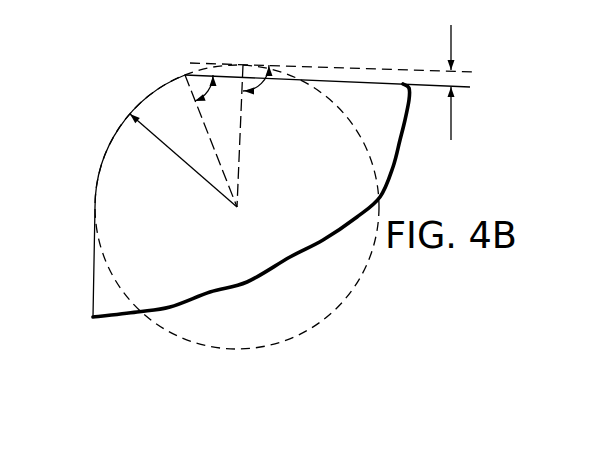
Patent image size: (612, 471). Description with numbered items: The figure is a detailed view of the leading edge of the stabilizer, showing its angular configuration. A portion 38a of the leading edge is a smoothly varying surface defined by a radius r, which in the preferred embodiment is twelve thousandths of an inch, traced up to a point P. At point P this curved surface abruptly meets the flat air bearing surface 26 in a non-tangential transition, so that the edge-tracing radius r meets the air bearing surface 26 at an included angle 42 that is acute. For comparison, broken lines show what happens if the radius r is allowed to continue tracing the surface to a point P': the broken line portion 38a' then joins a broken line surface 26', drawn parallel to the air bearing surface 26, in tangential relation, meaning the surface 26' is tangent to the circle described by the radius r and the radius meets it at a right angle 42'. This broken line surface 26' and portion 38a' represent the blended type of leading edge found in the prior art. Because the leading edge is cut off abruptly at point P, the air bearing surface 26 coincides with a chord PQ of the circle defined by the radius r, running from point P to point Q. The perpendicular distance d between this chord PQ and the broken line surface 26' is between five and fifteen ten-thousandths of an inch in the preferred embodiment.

The air bearing surface 26 is at (281, 196).
The broken line surface 26' is at (284, 179).
The portion of the leading edge 38a is at (116, 196).
The broken line portion 38a' is at (224, 113).
The included angle 42 is at (206, 58).
The right angle 42' is at (282, 52).
The point P is at (156, 48).
The point P' is at (264, 37).
The point Q is at (290, 78).
The radius r is at (167, 146).
The perpendicular distance d is at (462, 78).